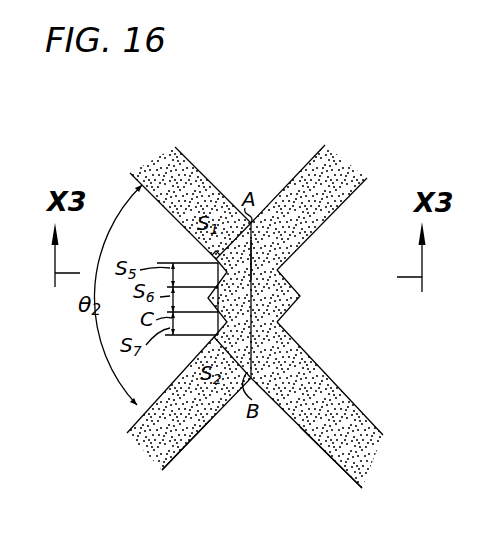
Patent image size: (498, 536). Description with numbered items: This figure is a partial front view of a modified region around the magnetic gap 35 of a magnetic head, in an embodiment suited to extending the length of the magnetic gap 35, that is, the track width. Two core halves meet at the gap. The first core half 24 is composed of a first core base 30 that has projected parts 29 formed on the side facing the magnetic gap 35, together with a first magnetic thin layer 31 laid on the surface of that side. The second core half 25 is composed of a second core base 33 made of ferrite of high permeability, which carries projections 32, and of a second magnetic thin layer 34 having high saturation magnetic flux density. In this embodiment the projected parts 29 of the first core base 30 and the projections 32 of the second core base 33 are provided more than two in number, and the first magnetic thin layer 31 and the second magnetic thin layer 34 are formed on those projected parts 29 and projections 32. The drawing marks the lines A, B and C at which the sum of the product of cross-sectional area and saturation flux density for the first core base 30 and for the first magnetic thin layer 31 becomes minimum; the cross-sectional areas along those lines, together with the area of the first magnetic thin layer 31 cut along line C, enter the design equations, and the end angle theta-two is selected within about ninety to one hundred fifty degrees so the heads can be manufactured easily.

The first core half 24 is at (143, 157).
The second core half 25 is at (358, 163).
The projected part 29 is at (211, 256).
The first core base 30 is at (128, 430).
The first magnetic thin layer 31 is at (178, 437).
The projection 32 is at (286, 274).
The second core base 33 is at (405, 428).
The second magnetic thin layer 34 is at (355, 457).
The magnetic gap 35 is at (254, 267).